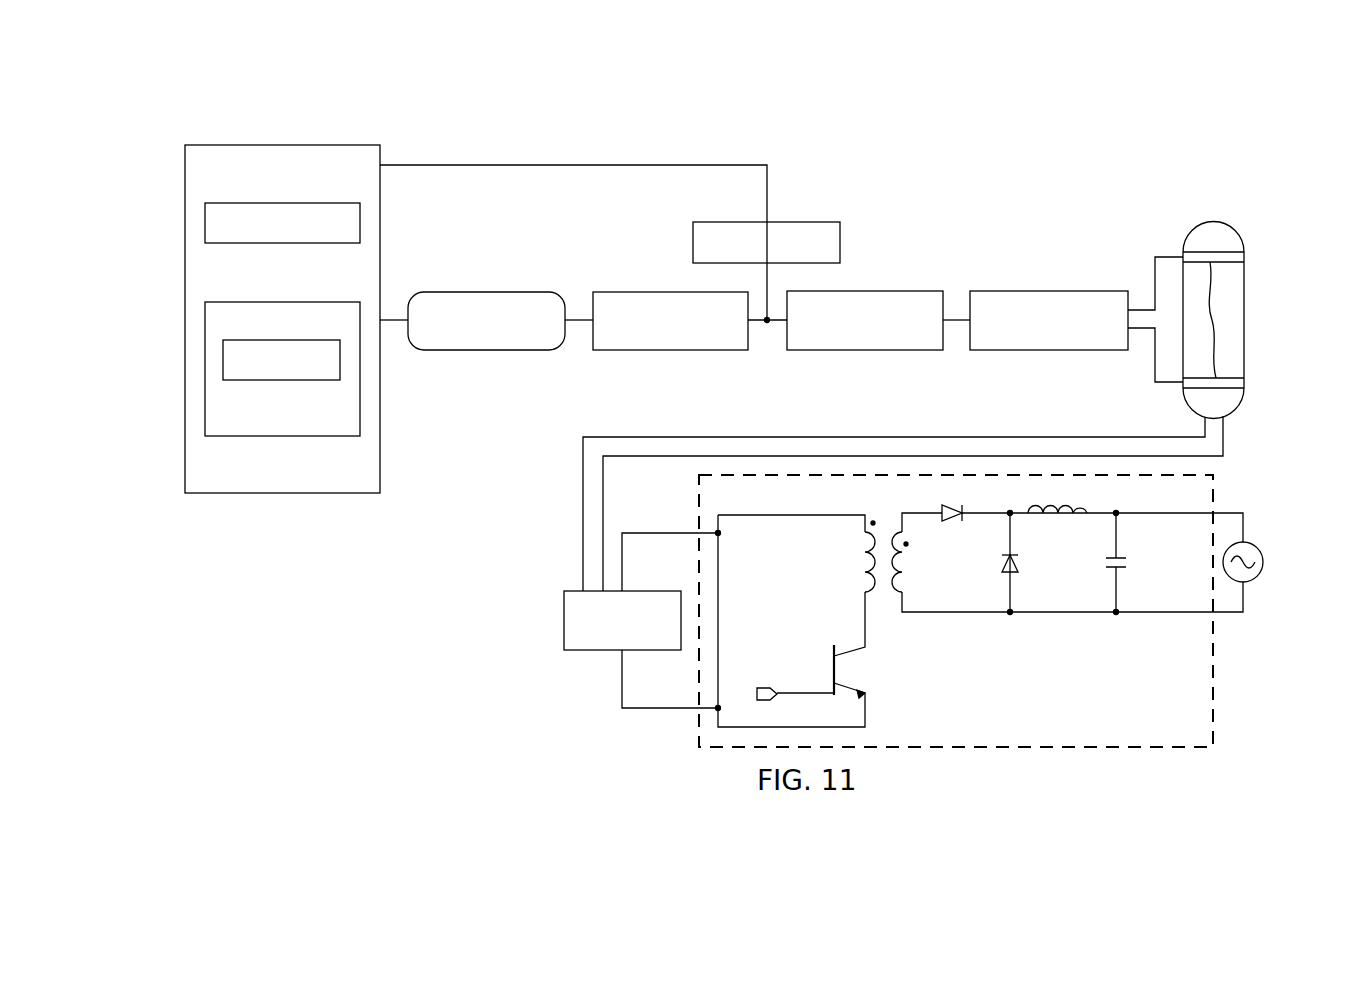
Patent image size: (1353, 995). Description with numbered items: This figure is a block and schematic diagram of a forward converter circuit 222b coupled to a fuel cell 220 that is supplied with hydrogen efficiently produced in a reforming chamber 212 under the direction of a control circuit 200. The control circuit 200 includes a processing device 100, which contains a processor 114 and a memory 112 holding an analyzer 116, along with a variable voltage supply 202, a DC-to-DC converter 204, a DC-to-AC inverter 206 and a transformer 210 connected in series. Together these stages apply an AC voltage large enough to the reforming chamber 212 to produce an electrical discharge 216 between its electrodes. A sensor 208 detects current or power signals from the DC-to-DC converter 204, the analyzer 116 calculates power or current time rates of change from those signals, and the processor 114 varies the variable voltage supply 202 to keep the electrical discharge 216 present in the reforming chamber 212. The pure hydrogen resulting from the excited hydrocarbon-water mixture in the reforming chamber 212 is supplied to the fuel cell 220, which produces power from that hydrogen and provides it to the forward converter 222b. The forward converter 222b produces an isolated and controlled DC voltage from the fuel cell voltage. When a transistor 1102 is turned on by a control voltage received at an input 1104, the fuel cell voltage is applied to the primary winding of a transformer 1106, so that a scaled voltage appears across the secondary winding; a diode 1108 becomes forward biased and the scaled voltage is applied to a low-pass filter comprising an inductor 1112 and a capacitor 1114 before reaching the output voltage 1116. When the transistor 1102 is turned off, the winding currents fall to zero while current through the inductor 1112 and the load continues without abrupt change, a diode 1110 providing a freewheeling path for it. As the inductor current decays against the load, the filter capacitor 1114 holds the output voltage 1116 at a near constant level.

The control circuit 200 is at (396, 78).
The processing device 100 is at (256, 142).
The processor 114 is at (291, 246).
The memory 112 is at (286, 439).
The analyzer 116 is at (284, 383).
The variable voltage supply 202 is at (487, 290).
The DC-to-DC converter 204 is at (660, 290).
The sensor 208 is at (787, 221).
The DC-to-AC inverter 206 is at (875, 290).
The transformer 210 is at (1049, 290).
The reforming chamber 212 is at (1228, 221).
The electrical discharge 216 is at (1215, 288).
The fuel cell 220 is at (593, 655).
The forward converter circuit 222b is at (1215, 718).
The transistor 1102 is at (829, 662).
The input 1104 is at (762, 685).
The transformer 1106 is at (871, 597).
The diode 1108 is at (953, 522).
The diode 1110 is at (1018, 565).
The inductor 1112 is at (1087, 493).
The capacitor 1114 is at (1127, 562).
The output voltage 1116 is at (1252, 583).